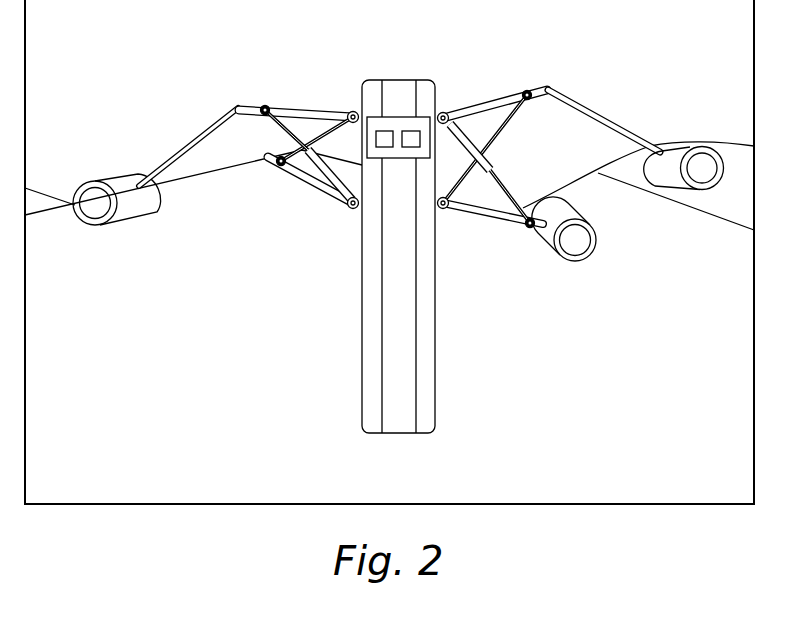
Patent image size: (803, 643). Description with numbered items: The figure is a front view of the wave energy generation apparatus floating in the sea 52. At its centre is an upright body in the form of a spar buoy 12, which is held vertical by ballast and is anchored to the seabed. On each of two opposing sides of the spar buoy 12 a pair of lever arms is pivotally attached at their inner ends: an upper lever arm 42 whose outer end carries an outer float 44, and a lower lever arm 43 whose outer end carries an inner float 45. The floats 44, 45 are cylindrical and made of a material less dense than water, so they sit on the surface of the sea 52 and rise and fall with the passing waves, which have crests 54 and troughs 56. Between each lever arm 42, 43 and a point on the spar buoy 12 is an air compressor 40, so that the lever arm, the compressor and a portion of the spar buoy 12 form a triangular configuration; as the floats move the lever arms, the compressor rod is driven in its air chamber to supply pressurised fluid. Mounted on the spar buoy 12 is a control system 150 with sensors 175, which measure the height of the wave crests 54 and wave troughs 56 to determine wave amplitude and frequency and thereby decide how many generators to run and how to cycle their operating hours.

The spar buoy 12 is at (410, 340).
The air compressor 40 is at (317, 165).
The upper lever arm 42 is at (195, 140).
The lower lever arm 43 is at (482, 215).
The outer float 44 is at (107, 180).
The inner float 45 is at (577, 248).
The sea 52 is at (187, 400).
The wave crest 54 is at (697, 140).
The wave trough 56 is at (578, 185).
The control system 150 is at (370, 118).
The sensors 175 is at (410, 137).